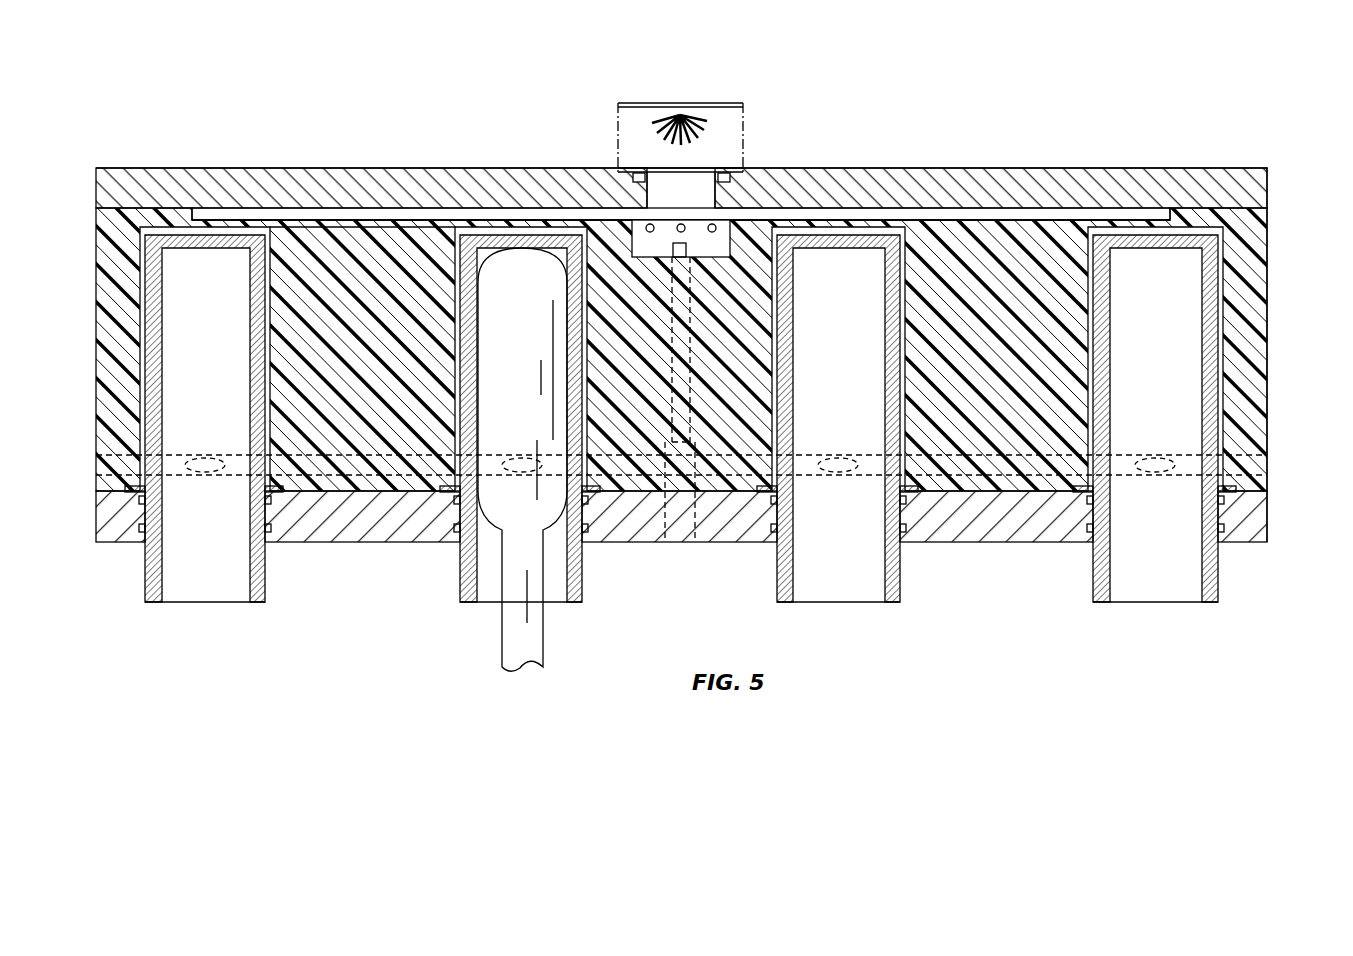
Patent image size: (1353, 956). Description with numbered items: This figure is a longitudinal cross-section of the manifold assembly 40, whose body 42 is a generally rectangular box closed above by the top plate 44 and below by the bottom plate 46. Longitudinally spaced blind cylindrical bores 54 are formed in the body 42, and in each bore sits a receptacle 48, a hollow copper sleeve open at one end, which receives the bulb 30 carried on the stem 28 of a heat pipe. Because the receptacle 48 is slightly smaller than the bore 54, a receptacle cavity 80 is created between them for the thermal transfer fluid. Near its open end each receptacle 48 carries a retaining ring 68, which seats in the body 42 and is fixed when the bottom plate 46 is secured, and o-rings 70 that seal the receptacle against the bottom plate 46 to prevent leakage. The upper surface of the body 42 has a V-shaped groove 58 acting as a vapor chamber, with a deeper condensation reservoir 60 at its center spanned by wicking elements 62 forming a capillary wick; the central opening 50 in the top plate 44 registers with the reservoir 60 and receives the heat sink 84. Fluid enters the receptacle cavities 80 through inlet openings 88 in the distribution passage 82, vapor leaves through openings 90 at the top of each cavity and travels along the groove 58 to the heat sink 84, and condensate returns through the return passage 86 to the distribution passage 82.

The stem 28 is at (512, 630).
The bulb 30 is at (495, 405).
The manifold assembly 40 is at (1228, 124).
The body 42 is at (1268, 246).
The top plate 44 is at (456, 188).
The bottom plate 46 is at (360, 520).
The receptacle 48 is at (145, 548).
The central opening 50 is at (645, 190).
The blind cylindrical bore 54 is at (205, 216).
The V-shaped groove 58 is at (345, 216).
The condensation reservoir 60 is at (727, 240).
The wicking element 62 is at (679, 232).
The retaining ring 68 is at (1243, 492).
The o-ring 70 is at (906, 500).
The receptacle cavity 80 is at (140, 368).
The distribution passage 82 is at (302, 478).
The heat sink 84 is at (668, 103).
The return passage 86 is at (660, 365).
The inlet opening 88 is at (203, 476).
The opening 90 is at (232, 216).